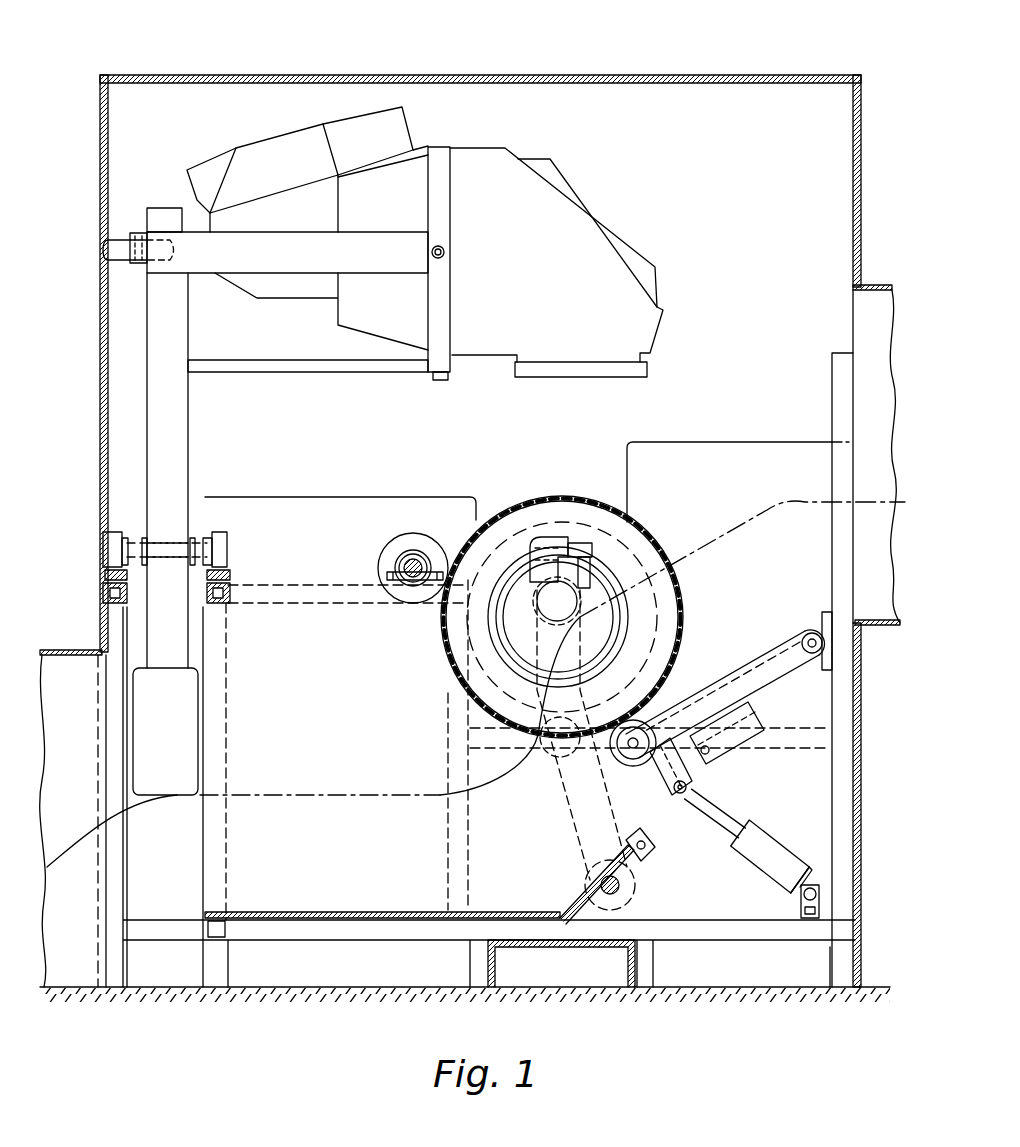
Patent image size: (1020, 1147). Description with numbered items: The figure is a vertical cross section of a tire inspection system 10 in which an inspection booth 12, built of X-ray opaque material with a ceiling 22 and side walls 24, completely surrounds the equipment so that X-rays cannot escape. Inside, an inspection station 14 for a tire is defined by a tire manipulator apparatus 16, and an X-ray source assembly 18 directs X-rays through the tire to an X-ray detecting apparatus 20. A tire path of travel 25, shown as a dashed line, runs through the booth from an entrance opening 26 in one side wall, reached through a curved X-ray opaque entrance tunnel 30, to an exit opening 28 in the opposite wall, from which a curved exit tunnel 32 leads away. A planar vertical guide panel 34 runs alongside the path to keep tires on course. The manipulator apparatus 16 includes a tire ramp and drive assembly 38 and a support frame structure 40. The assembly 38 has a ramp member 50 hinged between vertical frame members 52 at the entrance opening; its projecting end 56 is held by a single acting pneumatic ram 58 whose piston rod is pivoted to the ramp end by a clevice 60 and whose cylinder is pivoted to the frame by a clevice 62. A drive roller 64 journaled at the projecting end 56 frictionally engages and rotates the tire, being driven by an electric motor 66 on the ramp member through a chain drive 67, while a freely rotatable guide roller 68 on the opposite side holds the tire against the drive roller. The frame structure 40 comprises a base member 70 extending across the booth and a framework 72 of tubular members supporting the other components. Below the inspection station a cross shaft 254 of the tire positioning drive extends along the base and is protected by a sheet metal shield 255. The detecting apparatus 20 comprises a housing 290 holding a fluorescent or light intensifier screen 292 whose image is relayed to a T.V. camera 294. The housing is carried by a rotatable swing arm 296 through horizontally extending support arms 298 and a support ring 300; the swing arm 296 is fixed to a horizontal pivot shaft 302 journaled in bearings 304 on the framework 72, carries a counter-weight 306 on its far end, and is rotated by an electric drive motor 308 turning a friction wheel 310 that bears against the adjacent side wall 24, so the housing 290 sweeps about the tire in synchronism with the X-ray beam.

The tire inspection system 10 is at (292, 60).
The inspection booth 12 is at (752, 62).
The inspection station 14 is at (564, 492).
The tire manipulator apparatus 16 is at (470, 660).
The X-ray source assembly 18 is at (610, 546).
The X-ray detecting apparatus 20 is at (648, 235).
The ceiling 22 is at (158, 74).
The side walls 24 is at (104, 145).
The tire path of travel 25 is at (766, 512).
The entrance opening 26 is at (862, 323).
The exit opening 28 is at (107, 876).
The entrance tunnel 30 is at (873, 622).
The exit tunnel 32 is at (70, 672).
The guide panel 34 is at (340, 745).
The tire ramp and drive assembly 38 is at (818, 703).
The support frame structure 40 is at (468, 962).
The ramp member 50 is at (707, 718).
The vertical frame members 52 is at (843, 583).
The projecting end of ramp member 56 is at (632, 766).
The ram 58 is at (778, 845).
The clevice 60 is at (678, 800).
The clevice 62 is at (818, 889).
The drive roller 64 is at (582, 735).
The electric motor 66 is at (748, 752).
The chain drive 67 is at (700, 780).
The guide roller 68 is at (388, 548).
The base member 70 is at (586, 948).
The framework 72 is at (345, 910).
The cross shaft 254 is at (618, 888).
The sheet metal shield 255 is at (568, 906).
The housing 290 is at (583, 192).
The fluorescent or light intensifier screen 292 is at (609, 378).
The T.V. camera 294 is at (348, 130).
The swing arm 296 is at (177, 470).
The support arms 298 is at (272, 267).
The support ring 300 is at (444, 314).
The pivot shaft 302 is at (138, 540).
The bearings 304 is at (112, 542).
The counter-weight 306 is at (176, 768).
The electric drive motor 308 is at (162, 208).
The friction wheel 310 is at (118, 243).